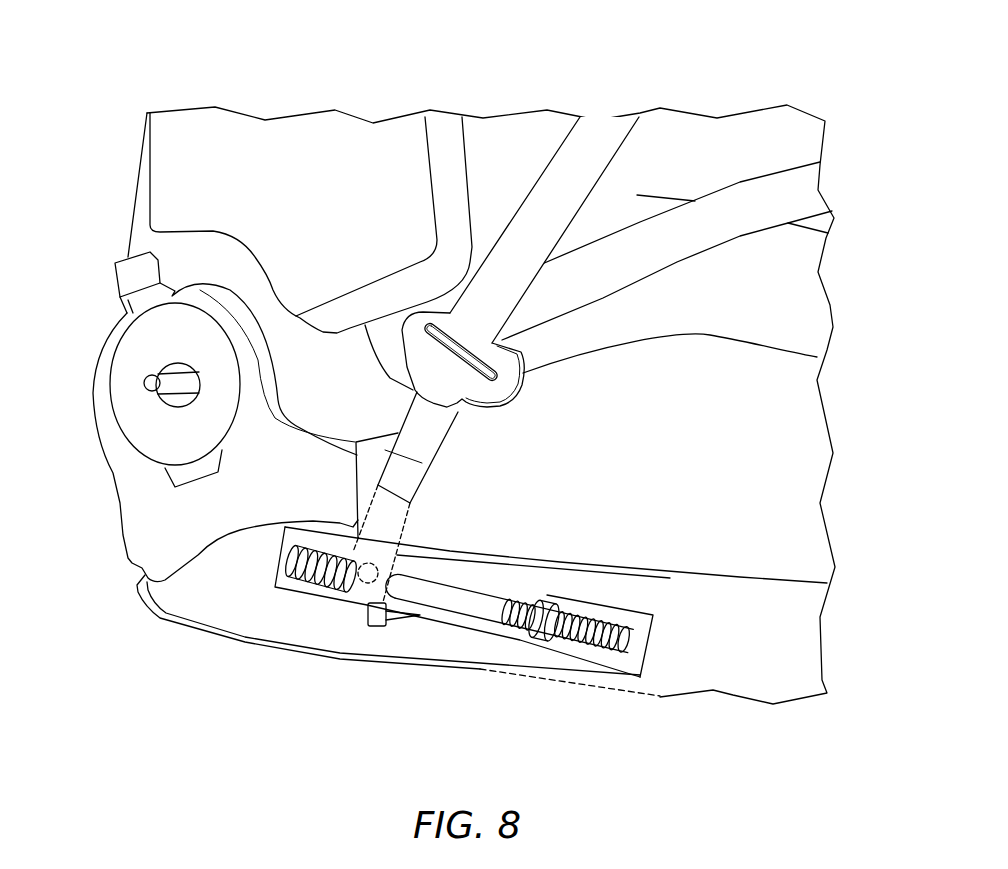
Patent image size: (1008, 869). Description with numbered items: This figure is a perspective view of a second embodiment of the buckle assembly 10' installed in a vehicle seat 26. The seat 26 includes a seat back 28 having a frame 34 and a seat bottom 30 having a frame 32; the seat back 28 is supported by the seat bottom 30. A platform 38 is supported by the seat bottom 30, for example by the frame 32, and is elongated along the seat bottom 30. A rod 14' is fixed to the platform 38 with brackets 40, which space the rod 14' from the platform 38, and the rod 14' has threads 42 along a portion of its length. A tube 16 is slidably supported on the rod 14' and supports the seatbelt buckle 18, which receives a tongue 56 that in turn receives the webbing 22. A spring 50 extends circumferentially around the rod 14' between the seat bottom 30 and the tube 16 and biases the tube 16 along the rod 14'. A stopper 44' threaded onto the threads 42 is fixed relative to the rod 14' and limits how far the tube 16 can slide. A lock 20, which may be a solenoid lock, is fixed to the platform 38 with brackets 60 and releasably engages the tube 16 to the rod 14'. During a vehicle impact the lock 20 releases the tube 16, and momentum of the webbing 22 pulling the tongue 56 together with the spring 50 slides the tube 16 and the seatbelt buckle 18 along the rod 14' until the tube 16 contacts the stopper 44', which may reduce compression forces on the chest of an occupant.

The buckle assembly 10' is at (496, 173).
The seat 26 is at (116, 128).
The seat back 28 is at (180, 190).
The frame 34 is at (150, 243).
The webbing 22 is at (542, 202).
The tongue 56 is at (512, 398).
The seat bottom 30 is at (780, 610).
The frame 32 is at (202, 598).
The brackets 40 is at (287, 563).
The rod 14' is at (533, 545).
The spring 50 is at (307, 537).
The tube 16 is at (413, 538).
The platform 38 is at (568, 600).
The threads 42 is at (603, 620).
The stopper 44' is at (568, 665).
The seatbelt buckle 18 is at (392, 465).
The lock 20 is at (367, 618).
The brackets 60 is at (387, 626).